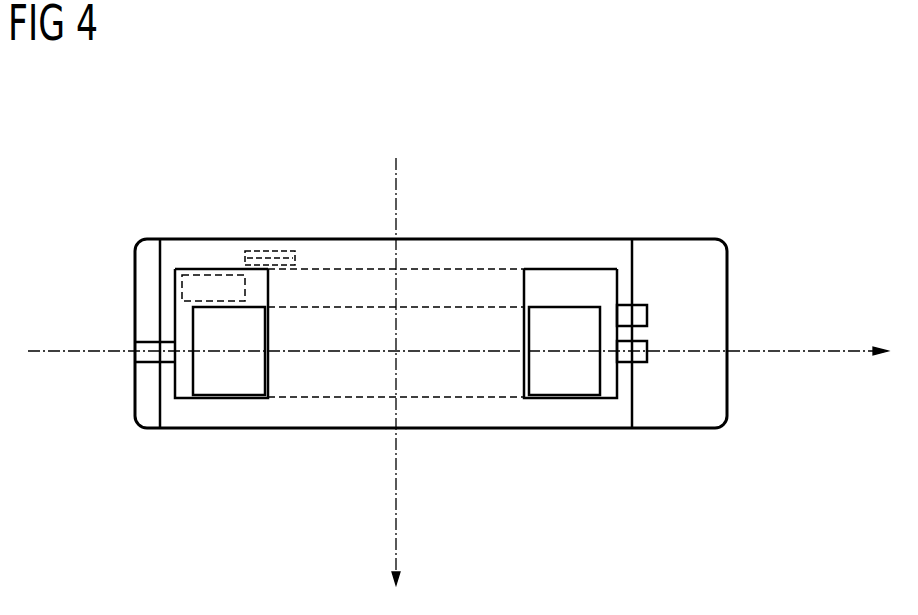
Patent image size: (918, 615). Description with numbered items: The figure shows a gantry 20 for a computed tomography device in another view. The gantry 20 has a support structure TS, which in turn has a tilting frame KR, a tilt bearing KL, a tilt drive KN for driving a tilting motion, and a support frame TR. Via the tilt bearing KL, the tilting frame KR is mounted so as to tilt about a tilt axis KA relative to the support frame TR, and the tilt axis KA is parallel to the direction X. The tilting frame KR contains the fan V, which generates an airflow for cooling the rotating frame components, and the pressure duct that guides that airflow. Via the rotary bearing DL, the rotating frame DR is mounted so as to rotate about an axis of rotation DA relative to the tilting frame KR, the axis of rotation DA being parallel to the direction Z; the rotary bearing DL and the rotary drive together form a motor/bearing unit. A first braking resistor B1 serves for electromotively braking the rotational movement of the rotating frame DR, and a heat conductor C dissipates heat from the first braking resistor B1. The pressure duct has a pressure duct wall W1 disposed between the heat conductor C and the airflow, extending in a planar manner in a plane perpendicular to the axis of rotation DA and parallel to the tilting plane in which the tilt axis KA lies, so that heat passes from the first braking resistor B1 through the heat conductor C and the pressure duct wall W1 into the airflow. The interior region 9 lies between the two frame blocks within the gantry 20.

The gantry 20 is at (579, 87).
The cavity / interior space 9 is at (435, 328).
The fan V is at (213, 288).
The rotary bearing DL is at (262, 292).
The first braking resistor B1 is at (280, 253).
The heat conductor C is at (296, 262).
The pressure duct wall W1 is at (348, 268).
The tilt drive KN is at (647, 317).
The tilt axis KA is at (767, 352).
The tilt bearing KL is at (647, 357).
The direction X is at (845, 355).
The direction Z is at (391, 542).
The axis of rotation DA is at (392, 477).
The support structure TS is at (470, 428).
The tilting frame KR is at (233, 308).
The support frame TR is at (431, 333).
The rotating frame DR is at (560, 375).